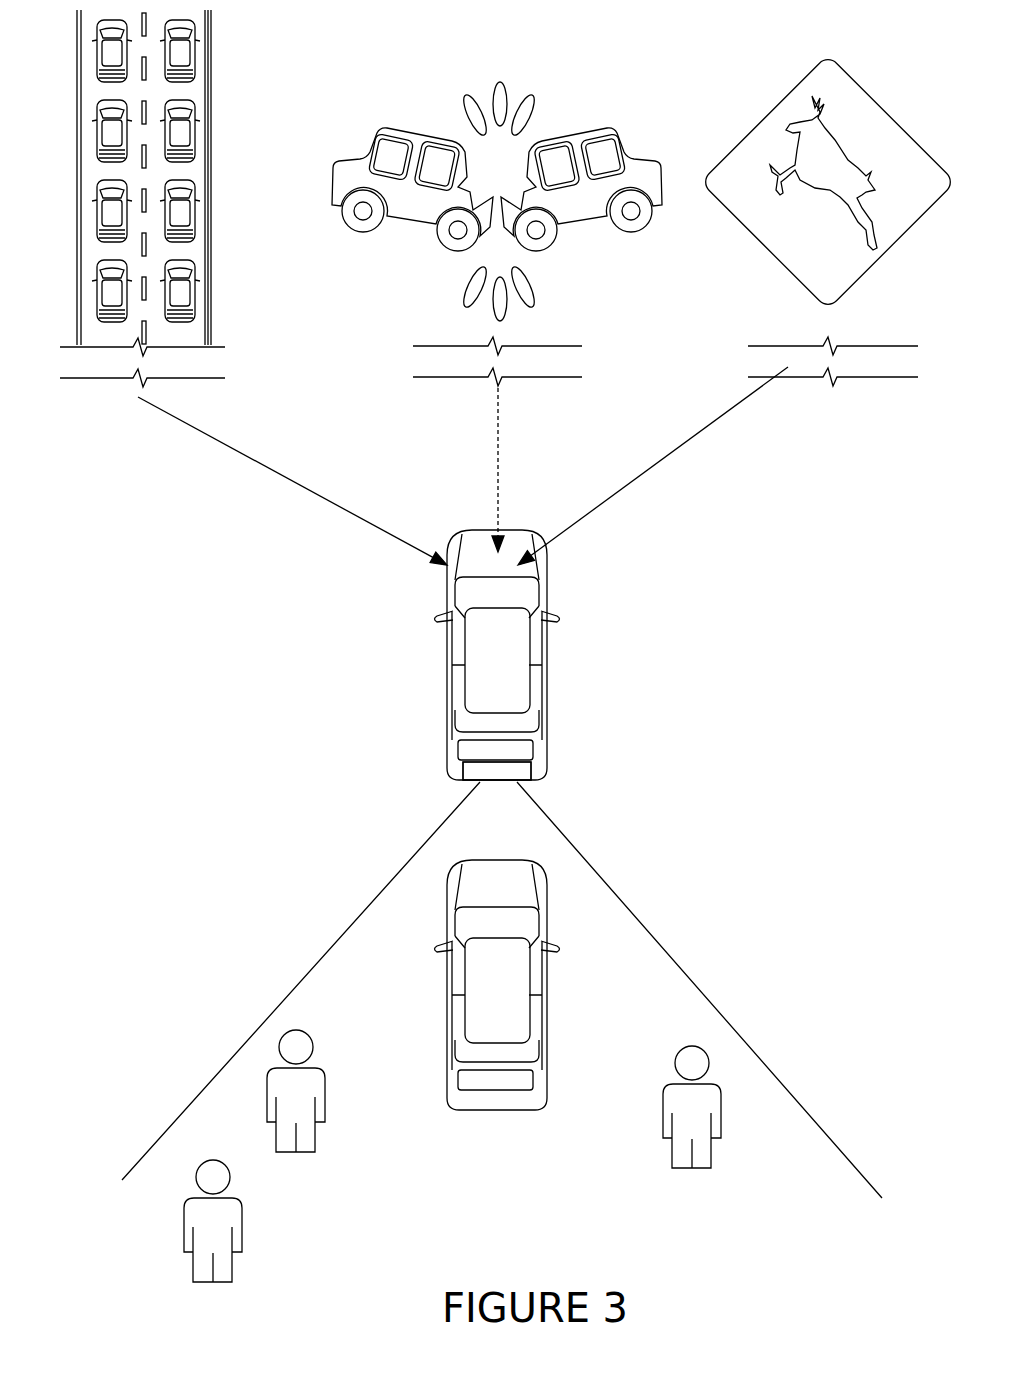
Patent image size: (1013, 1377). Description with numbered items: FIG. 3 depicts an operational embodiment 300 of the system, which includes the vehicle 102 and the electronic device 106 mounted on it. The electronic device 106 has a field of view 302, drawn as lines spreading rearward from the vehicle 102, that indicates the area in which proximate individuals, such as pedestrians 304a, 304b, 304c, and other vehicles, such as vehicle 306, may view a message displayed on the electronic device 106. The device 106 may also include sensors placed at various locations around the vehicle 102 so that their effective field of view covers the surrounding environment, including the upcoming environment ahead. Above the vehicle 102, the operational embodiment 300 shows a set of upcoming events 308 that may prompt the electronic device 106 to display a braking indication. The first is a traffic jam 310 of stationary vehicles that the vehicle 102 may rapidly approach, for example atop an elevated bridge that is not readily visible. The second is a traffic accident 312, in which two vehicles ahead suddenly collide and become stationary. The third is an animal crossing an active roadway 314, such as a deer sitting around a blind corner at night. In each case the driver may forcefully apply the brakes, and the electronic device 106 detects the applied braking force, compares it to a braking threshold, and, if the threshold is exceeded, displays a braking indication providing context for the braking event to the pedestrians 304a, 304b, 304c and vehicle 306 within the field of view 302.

The operational embodiment 300 is at (522, 37).
The vehicle 102 is at (547, 652).
The electronic device 106 is at (497, 782).
The field of view 302 is at (637, 913).
The pedestrian 304a is at (721, 1118).
The pedestrian 304b is at (327, 1097).
The pedestrian 304c is at (244, 1228).
The vehicle 306 is at (497, 1108).
The set of upcoming events 308 is at (190, 362).
The traffic jam 310 is at (212, 176).
The traffic accident 312 is at (533, 223).
The animal crossing an active roadway 314 is at (907, 212).